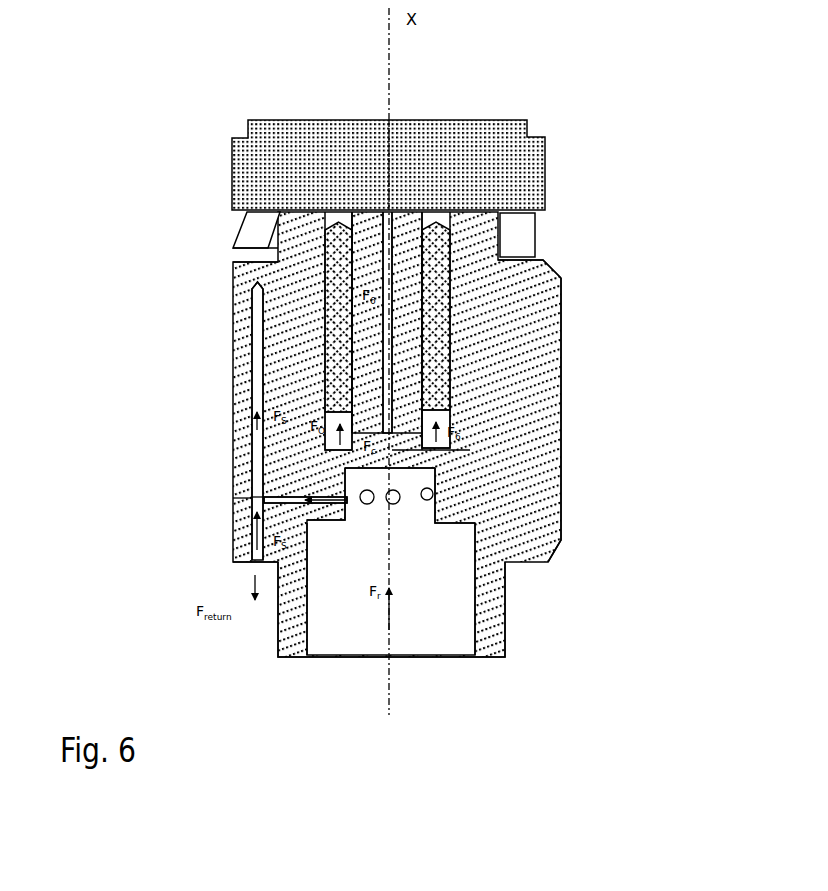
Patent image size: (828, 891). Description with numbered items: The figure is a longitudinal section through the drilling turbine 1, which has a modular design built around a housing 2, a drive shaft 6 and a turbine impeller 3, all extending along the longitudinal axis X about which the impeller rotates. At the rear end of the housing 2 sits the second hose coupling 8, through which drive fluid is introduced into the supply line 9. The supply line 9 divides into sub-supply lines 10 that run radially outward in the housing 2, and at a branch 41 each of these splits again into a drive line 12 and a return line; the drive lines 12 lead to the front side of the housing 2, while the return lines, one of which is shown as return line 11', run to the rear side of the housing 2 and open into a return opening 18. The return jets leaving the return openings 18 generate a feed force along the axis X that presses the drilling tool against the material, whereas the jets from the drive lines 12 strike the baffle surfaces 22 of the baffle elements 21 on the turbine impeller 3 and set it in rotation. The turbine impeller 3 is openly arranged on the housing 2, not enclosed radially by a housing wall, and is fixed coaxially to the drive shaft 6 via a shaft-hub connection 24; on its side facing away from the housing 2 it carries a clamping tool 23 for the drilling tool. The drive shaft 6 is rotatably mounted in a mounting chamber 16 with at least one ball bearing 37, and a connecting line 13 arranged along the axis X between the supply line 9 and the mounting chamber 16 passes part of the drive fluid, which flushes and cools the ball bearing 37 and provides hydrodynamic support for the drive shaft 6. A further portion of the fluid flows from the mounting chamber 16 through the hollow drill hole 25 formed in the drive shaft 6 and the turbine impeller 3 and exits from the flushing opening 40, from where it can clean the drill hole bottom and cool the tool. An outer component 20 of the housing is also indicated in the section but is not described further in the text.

The drilling turbine 1 is at (540, 84).
The housing 2 is at (232, 432).
The turbine impeller 3 is at (268, 176).
The drive shaft 6 is at (410, 300).
The second hose coupling 8 is at (476, 630).
The supply line 9 is at (415, 512).
The sub-supply lines 10 is at (288, 494).
The return chamber 11' is at (190, 528).
The drive lines 12 is at (252, 396).
The connecting line 13 is at (395, 460).
The mounting chamber 16 is at (443, 443).
The return opening 18 is at (263, 563).
The outer wall 20 is at (567, 526).
The baffle elements 21 is at (538, 249).
The baffle surfaces 22 is at (526, 229).
The clamping tool 23 is at (248, 128).
The shaft-hub connection 24 is at (355, 213).
The hollow drill hole 25 is at (390, 375).
The ball bearing 37 is at (438, 330).
The flushing opening 40 is at (398, 173).
The branch 41 is at (263, 497).